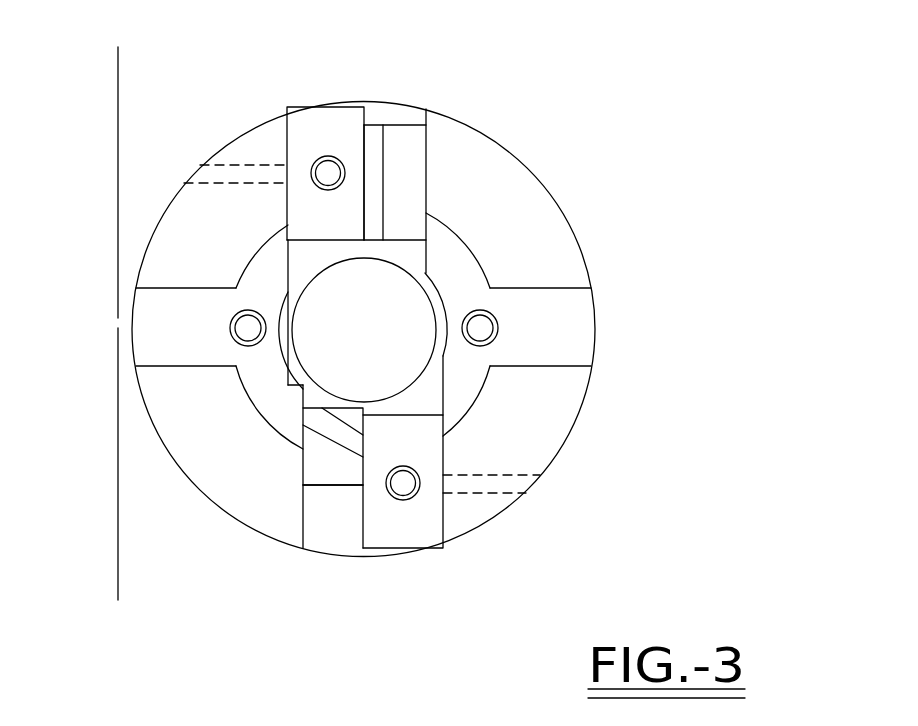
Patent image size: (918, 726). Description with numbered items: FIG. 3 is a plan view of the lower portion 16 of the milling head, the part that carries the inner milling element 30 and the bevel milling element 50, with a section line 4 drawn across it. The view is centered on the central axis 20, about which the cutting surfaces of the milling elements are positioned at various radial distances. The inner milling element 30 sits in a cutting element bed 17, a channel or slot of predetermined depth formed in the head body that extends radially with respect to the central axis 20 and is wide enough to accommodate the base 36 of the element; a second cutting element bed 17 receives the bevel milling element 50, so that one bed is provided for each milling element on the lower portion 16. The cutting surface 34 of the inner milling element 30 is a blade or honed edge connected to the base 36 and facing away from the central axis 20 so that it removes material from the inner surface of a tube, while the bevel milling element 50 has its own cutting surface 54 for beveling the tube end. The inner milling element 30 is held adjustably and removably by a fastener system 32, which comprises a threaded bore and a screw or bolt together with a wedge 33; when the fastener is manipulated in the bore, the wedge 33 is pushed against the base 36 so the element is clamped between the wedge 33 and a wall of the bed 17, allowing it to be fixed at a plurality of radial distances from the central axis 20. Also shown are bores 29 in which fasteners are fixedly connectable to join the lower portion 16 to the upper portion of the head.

The section line 4- 4 is at (141, 95).
The lower portion 16 is at (570, 222).
The cutting element bed 17 is at (382, 108).
The central axis 20 is at (365, 330).
The bore 29 is at (237, 322).
The inner milling element 30 is at (327, 499).
The fastener system 32 is at (274, 145).
The wedge 33 is at (302, 107).
The cutting surface 34 is at (335, 430).
The base 36 is at (317, 467).
The bevel milling element 50 is at (404, 112).
The cutting surface 54 is at (410, 173).